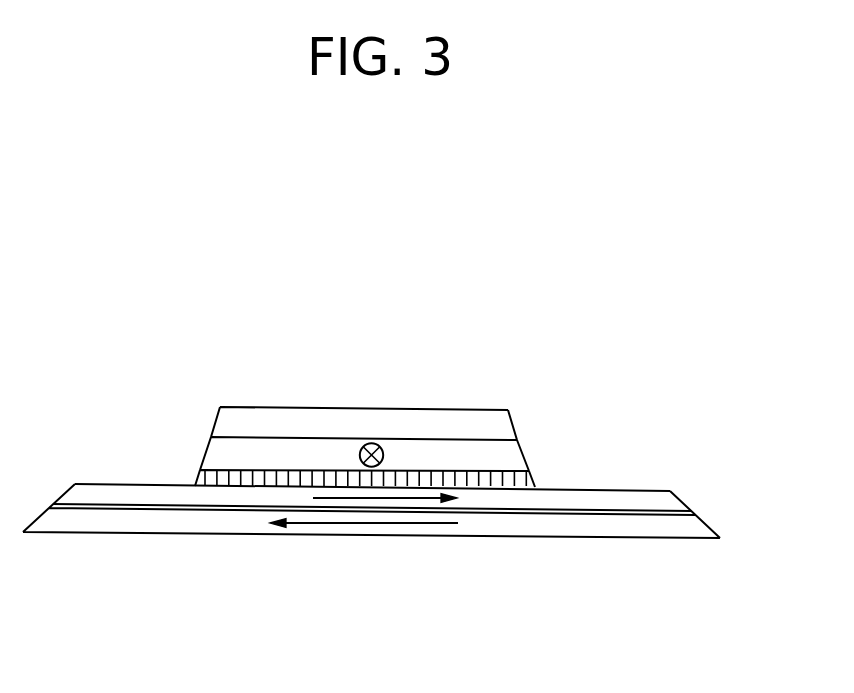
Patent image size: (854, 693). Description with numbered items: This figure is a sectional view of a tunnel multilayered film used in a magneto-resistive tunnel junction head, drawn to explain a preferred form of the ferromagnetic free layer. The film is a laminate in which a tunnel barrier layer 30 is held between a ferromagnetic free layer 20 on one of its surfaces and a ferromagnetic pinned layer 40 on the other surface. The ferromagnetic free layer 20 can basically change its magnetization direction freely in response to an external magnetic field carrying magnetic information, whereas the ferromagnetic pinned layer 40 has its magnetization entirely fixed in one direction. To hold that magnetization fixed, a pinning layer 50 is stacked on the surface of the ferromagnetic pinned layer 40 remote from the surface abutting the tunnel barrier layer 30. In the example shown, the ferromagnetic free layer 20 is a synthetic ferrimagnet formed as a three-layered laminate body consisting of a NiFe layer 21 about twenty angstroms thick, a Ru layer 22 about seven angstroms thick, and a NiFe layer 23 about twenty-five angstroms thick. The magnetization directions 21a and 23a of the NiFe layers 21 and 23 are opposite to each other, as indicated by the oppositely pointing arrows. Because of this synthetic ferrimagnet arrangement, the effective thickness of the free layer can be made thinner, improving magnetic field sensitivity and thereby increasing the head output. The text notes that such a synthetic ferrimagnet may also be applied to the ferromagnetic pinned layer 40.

The ferromagnetic free layer 20 is at (422, 515).
The NiFe layer 21 is at (717, 535).
The Ru layer 22 is at (695, 514).
The NiFe layer 23 is at (420, 477).
The magnetization direction 21a is at (345, 523).
The magnetization direction 23a is at (425, 498).
The tunnel barrier layer 30 is at (530, 480).
The ferromagnetic pinned layer 40 is at (515, 453).
The pinning layer 50 is at (502, 422).